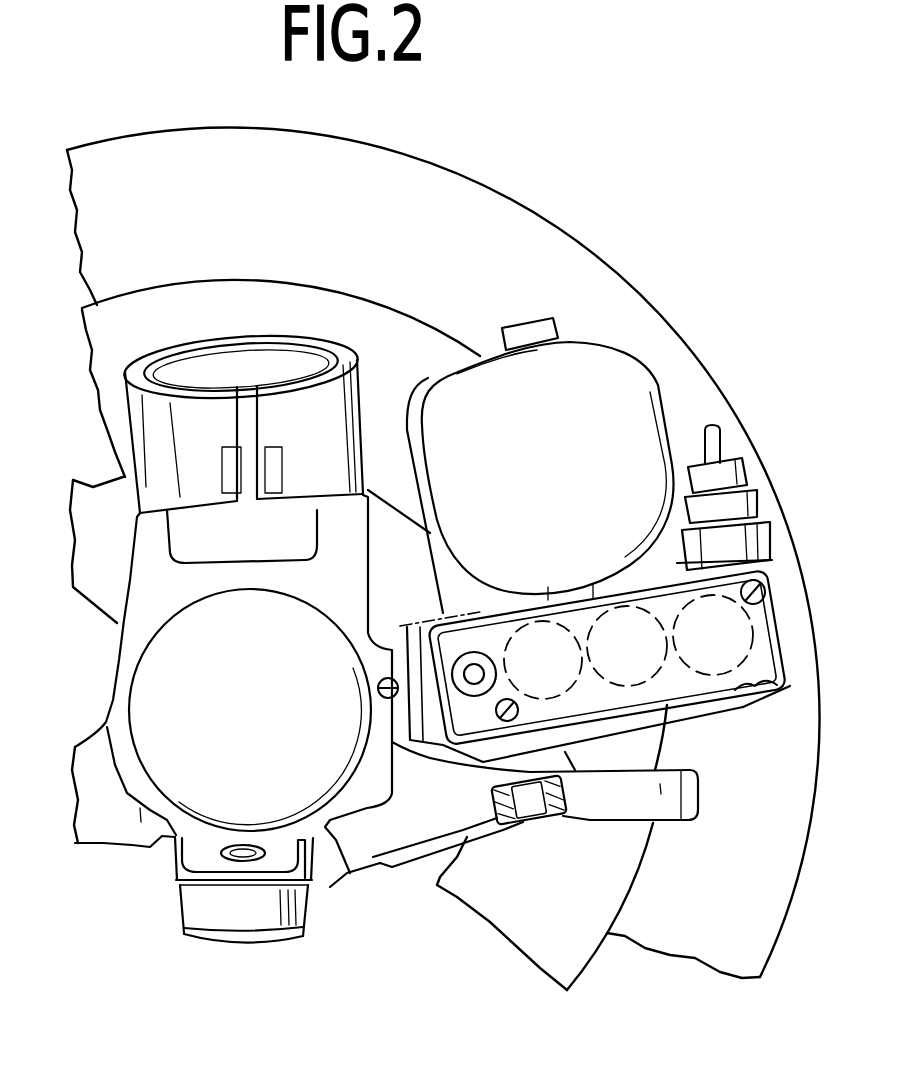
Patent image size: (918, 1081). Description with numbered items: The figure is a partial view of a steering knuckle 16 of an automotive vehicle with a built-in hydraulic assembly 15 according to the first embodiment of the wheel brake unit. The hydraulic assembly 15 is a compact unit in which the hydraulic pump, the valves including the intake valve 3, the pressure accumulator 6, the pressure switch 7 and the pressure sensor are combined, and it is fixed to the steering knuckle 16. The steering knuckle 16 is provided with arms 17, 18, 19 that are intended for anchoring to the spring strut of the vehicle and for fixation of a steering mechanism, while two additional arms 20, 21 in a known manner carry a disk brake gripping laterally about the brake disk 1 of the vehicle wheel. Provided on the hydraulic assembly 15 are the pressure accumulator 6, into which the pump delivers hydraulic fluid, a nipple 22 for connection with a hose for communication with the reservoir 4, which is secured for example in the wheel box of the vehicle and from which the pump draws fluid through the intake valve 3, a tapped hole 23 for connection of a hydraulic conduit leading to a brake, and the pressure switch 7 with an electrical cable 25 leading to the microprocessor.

The brake disk 1 is at (406, 338).
The pressure accumulator 6 is at (618, 370).
The pressure switch 7 is at (737, 503).
The hydraulic assembly 15 is at (722, 735).
The steering knuckle 16 is at (348, 890).
The arm 17 is at (300, 397).
The arm 18 is at (198, 913).
The arm 19 is at (663, 803).
The arm 20 is at (103, 570).
The arm 21 is at (103, 827).
The nipple 22 is at (390, 700).
The tapped hole 23 is at (757, 692).
The electrical cable 25 is at (723, 440).
The intake valve 3 is at (777, 562).
The reservoir 4 is at (707, 636).